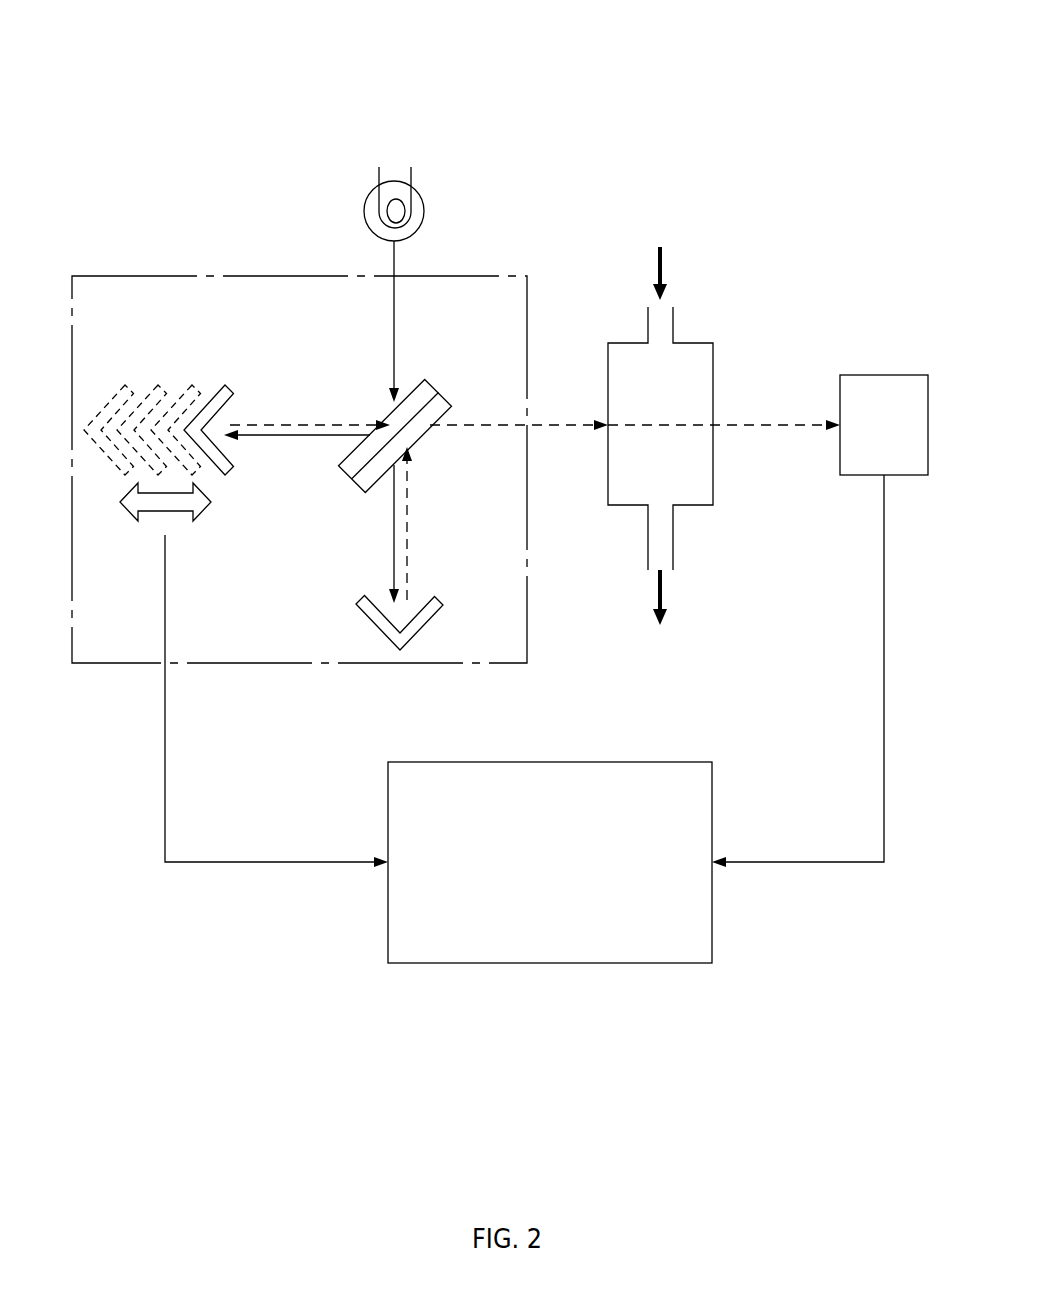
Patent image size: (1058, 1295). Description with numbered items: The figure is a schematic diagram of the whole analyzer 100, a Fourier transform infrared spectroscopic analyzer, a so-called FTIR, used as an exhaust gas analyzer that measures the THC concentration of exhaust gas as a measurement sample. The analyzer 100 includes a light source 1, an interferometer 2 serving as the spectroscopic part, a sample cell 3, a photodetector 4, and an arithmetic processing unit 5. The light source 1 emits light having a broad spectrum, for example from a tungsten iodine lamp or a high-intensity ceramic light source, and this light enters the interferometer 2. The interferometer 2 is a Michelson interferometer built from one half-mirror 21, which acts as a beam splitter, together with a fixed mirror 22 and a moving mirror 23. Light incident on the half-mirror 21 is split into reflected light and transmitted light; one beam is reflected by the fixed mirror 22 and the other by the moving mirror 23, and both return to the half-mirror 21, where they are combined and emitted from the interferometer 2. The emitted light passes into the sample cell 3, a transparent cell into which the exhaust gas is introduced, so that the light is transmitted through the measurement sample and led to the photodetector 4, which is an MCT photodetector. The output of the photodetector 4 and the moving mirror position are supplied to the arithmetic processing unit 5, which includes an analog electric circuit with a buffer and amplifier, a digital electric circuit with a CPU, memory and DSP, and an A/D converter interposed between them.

The analyzer 100 is at (523, 128).
The light source 1 is at (423, 198).
The interferometer 2 is at (287, 276).
The half-mirror 21 is at (430, 386).
The fixed mirror 22 is at (441, 607).
The moving mirror 23 is at (209, 388).
The sample cell 3 is at (683, 342).
The photodetector 4 is at (902, 375).
The arithmetic processing unit 5 is at (550, 963).